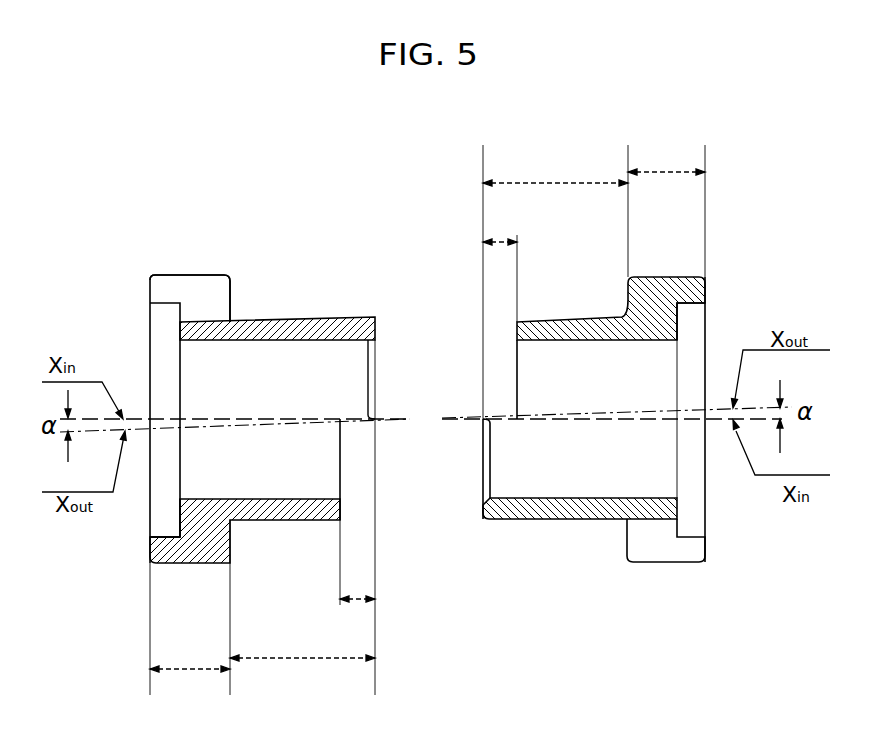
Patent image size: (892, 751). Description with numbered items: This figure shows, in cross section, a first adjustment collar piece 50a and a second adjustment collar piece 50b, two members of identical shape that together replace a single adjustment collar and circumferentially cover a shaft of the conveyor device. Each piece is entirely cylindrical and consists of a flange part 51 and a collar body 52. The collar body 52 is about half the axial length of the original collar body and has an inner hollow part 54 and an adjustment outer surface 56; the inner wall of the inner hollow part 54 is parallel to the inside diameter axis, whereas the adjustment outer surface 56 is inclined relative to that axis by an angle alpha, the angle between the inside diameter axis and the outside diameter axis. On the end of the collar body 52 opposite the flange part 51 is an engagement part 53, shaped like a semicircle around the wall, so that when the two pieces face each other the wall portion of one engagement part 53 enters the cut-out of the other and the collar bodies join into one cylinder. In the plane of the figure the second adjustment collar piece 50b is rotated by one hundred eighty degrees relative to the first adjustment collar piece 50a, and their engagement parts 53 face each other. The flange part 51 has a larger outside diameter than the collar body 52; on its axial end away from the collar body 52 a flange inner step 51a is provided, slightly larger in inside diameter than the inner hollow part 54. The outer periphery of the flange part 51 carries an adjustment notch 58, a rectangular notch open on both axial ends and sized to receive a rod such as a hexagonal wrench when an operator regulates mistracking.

The first adjustment collar piece 50a is at (236, 202).
The second adjustment collar piece 50b is at (609, 640).
The flange part 51 is at (427, 422).
The flange inner step 51a is at (163, 537).
The collar body 52 is at (429, 423).
The engagement part 53 is at (428, 422).
The inner hollow part 54 is at (302, 498).
The adjustment outer surface 56 is at (272, 318).
The adjustment notch 58 is at (199, 276).